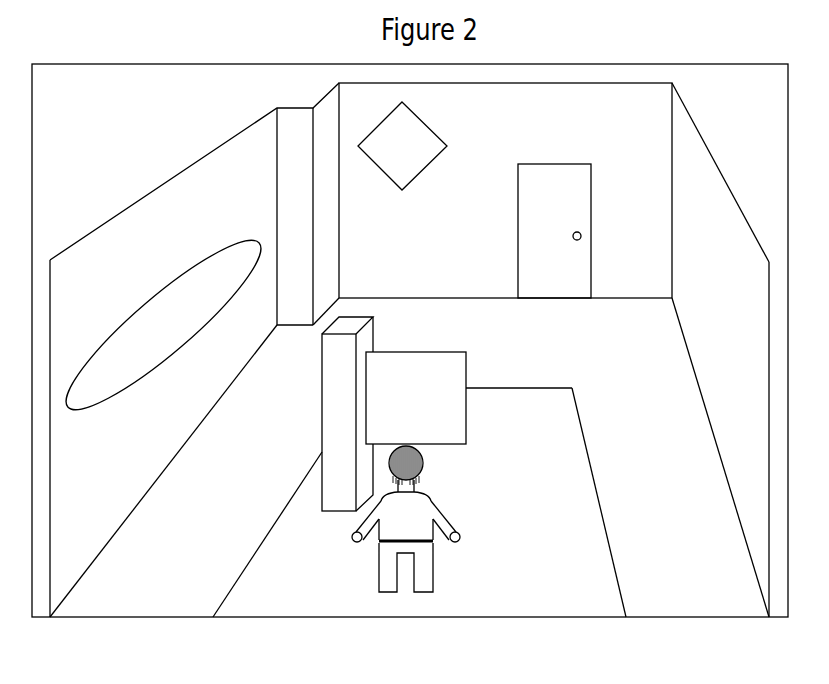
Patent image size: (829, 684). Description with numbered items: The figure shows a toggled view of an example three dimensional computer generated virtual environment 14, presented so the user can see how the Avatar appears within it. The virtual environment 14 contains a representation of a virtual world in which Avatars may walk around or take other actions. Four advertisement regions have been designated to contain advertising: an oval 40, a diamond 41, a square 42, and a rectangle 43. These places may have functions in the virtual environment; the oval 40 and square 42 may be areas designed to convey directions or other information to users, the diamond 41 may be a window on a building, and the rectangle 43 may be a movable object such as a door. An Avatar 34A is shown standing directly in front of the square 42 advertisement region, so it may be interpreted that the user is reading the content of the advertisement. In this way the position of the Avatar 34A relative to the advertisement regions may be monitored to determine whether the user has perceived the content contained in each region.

The three dimensional computer generated virtual environment 14 is at (75, 91).
The oval 40 is at (157, 333).
The diamond 41 is at (392, 158).
The square 42 is at (408, 408).
The rectangle 43 is at (542, 211).
The Avatar 34A is at (446, 559).